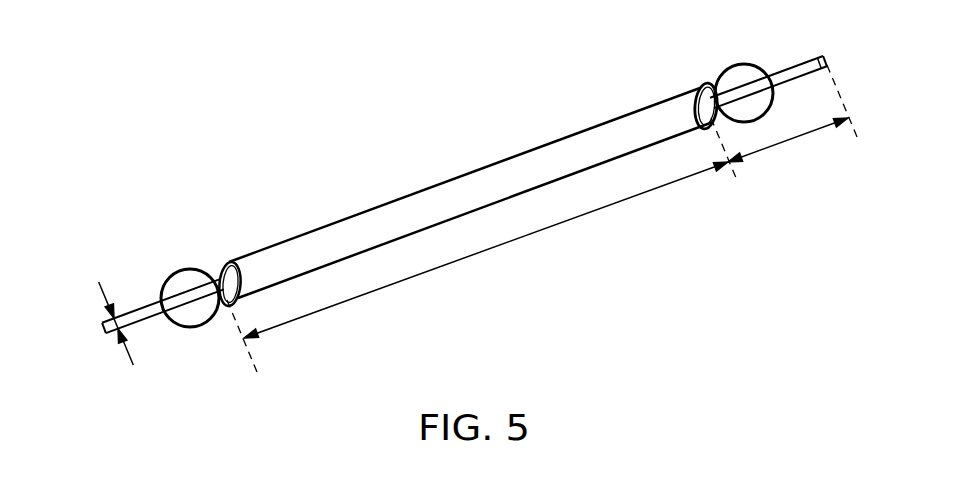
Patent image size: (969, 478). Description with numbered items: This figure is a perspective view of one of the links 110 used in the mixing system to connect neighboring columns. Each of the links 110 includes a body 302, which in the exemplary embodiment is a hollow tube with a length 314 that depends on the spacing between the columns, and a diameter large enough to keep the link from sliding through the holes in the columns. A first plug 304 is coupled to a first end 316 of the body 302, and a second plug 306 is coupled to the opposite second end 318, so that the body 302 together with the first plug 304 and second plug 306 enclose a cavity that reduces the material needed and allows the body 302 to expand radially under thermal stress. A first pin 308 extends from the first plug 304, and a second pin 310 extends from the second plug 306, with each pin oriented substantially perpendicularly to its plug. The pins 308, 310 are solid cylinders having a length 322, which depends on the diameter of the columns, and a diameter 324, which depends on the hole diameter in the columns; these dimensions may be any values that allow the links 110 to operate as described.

The links 110 is at (422, 123).
The body 302 is at (323, 242).
The first plug 304 is at (150, 298).
The second plug 306 is at (704, 88).
The first pin 308 is at (148, 296).
The second pin 310 is at (796, 64).
The length 314 is at (523, 242).
The first end 316 is at (218, 263).
The second end 318 is at (714, 86).
The length 322 is at (795, 140).
The diameter 324 is at (103, 330).